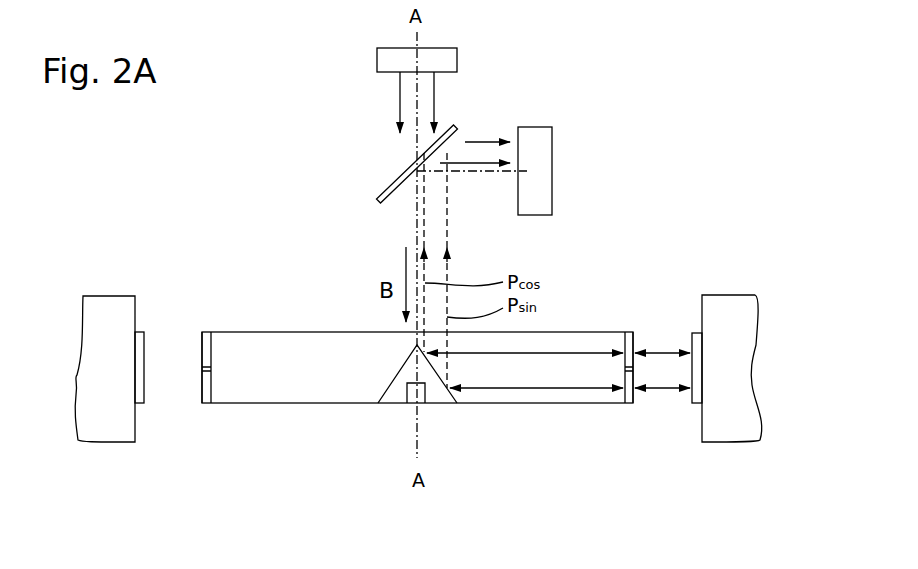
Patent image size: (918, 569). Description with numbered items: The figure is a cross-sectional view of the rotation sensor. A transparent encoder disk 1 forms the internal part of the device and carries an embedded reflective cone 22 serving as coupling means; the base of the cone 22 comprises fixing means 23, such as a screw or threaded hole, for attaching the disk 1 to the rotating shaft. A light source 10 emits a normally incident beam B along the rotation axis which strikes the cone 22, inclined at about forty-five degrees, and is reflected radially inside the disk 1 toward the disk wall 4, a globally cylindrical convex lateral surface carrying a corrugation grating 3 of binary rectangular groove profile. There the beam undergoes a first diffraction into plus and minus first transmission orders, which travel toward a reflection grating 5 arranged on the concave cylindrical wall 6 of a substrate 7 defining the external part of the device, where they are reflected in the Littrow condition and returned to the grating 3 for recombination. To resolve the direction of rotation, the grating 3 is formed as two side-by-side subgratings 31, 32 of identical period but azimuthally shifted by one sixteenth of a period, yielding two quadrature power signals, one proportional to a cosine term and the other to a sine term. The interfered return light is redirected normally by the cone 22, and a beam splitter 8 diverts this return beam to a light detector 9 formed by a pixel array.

The transparent encoder disk 1 is at (273, 392).
The corrugation grating 3 is at (202, 392).
The disk wall 4 is at (212, 340).
The reflection grating 5 is at (145, 353).
The wall of substrate 6 is at (137, 308).
The substrate 7 is at (725, 313).
The beam splitter 8 is at (457, 129).
The light detector 9 is at (553, 163).
The light source 10 is at (395, 53).
The reflective cone 22 is at (392, 398).
The fixing means 23 is at (410, 400).
The first subgrating 31 is at (638, 397).
The second subgrating 32 is at (638, 338).